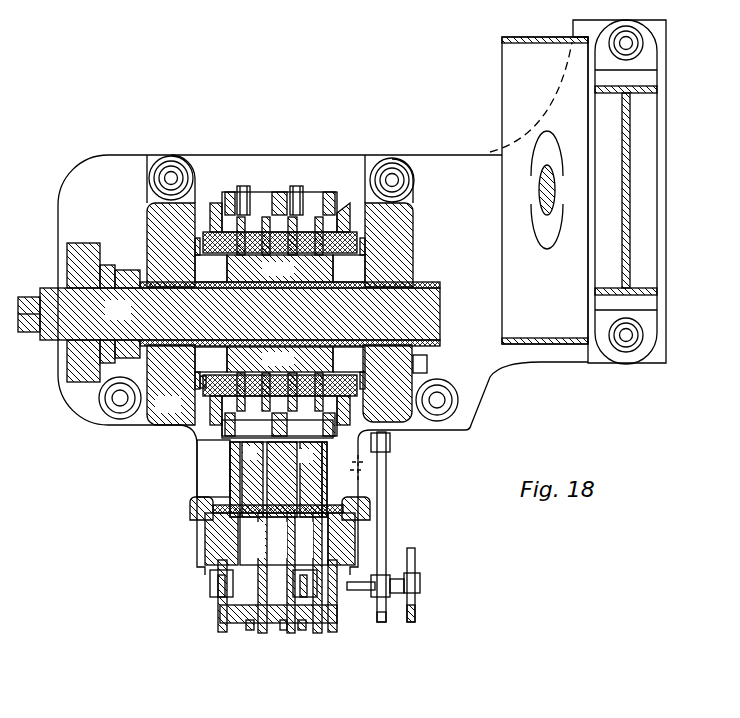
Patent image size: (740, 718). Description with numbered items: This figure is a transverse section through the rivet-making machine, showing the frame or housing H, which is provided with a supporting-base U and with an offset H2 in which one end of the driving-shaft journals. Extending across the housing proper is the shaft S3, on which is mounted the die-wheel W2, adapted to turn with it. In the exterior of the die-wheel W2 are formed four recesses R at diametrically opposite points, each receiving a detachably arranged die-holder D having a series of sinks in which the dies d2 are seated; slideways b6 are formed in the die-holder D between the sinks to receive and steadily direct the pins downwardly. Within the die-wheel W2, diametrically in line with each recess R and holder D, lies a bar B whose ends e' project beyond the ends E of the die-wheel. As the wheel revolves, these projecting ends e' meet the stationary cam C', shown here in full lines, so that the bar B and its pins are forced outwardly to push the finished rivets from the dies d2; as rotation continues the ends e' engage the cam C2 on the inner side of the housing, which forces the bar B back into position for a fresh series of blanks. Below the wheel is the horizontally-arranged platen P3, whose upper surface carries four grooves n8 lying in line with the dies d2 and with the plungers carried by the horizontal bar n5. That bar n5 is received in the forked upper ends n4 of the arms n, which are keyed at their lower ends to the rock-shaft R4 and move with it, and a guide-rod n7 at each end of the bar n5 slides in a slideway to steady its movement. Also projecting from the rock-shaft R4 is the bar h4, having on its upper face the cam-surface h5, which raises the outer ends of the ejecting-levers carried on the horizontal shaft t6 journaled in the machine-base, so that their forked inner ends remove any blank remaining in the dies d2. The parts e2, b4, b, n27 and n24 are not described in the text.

The supporting-base U is at (66, 397).
The frame or housing H is at (148, 193).
The offset H2 is at (619, 192).
The bar B is at (195, 247).
The shaft S3 is at (446, 314).
The cam C2 is at (428, 357).
The die-wheel W2 is at (280, 313).
The stationary cam C' is at (280, 268).
The ends of the die-wheel E is at (280, 371).
The ends of the bar e' is at (283, 304).
The spacer e2 is at (198, 380).
The die-holder D is at (280, 324).
The recess R is at (222, 201).
The die d2 is at (287, 298).
The pins b4 is at (279, 195).
The slideway b6 is at (278, 448).
The groove n8 is at (213, 468).
The horizontal shaft t6 is at (359, 467).
The arm n is at (346, 600).
The pins b is at (278, 533).
The guide-rod n7 is at (218, 629).
The column n27 is at (335, 626).
The fork n4 is at (250, 628).
The bar n5 is at (283, 621).
The pin end n24 is at (307, 629).
The platen P3 is at (424, 494).
The bar h4 is at (388, 463).
The rock-shaft R4 is at (367, 578).
The cam-surface h5 is at (411, 565).